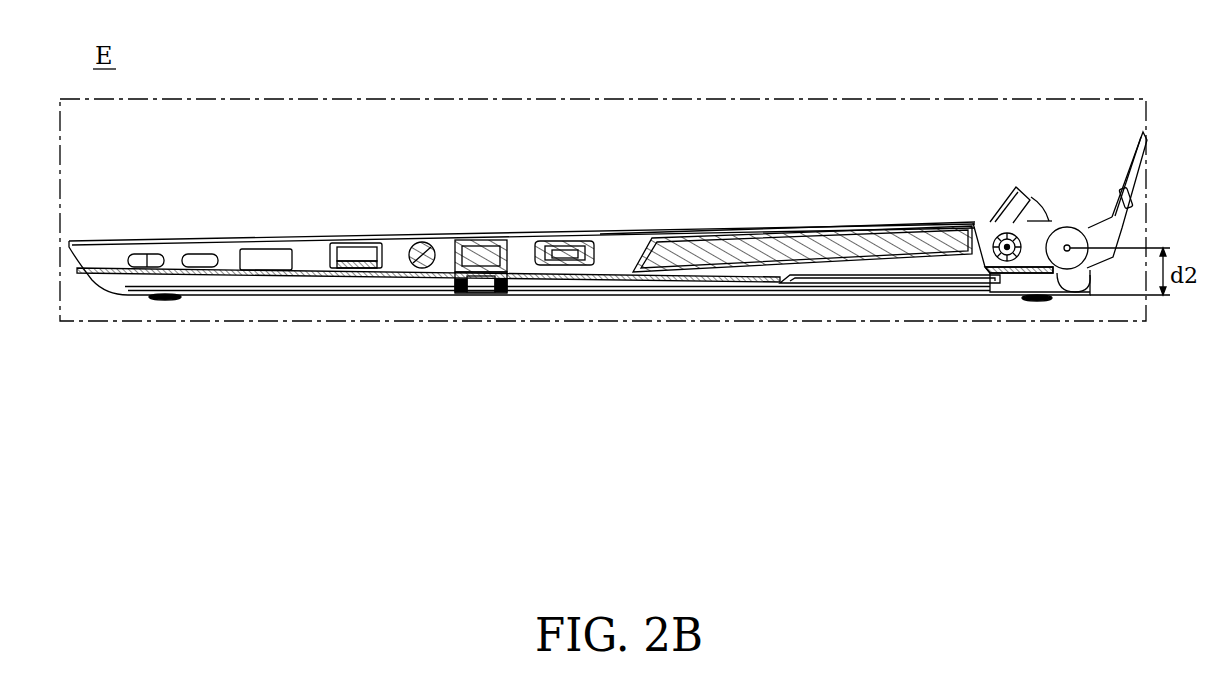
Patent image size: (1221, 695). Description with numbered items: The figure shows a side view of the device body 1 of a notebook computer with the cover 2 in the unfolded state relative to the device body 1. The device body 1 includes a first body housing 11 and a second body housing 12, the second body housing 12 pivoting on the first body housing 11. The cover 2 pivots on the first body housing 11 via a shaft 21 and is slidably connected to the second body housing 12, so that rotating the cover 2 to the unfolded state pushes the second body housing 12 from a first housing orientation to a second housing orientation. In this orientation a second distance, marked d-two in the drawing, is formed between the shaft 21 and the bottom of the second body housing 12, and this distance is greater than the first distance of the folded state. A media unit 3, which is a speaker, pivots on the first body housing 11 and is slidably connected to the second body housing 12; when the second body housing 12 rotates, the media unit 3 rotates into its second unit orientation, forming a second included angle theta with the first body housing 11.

The device body 1 is at (579, 317).
The first body housing 11 is at (608, 266).
The second body housing 12 is at (527, 290).
The cover 2 is at (1141, 197).
The shaft 21 is at (1067, 244).
The media unit 3 is at (988, 211).